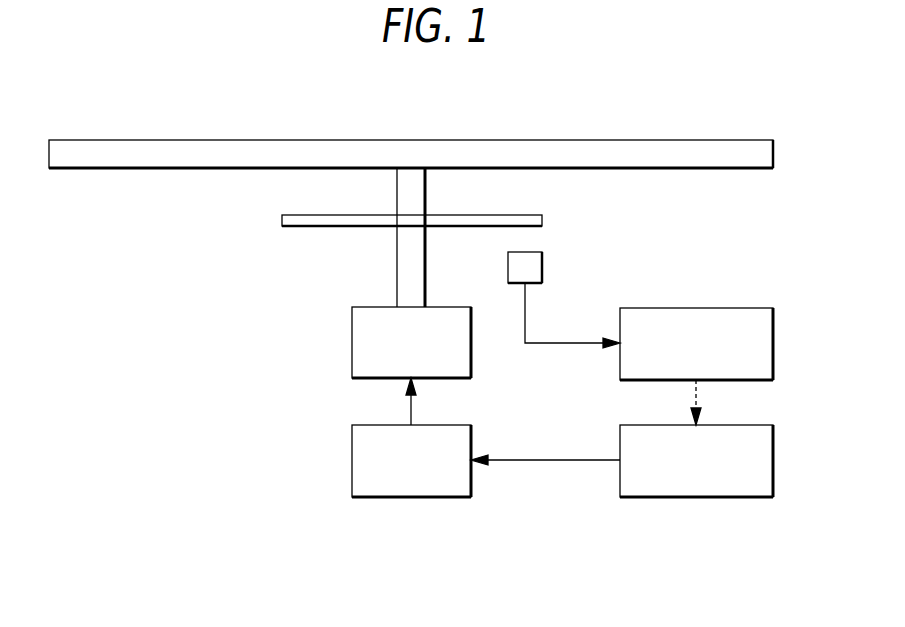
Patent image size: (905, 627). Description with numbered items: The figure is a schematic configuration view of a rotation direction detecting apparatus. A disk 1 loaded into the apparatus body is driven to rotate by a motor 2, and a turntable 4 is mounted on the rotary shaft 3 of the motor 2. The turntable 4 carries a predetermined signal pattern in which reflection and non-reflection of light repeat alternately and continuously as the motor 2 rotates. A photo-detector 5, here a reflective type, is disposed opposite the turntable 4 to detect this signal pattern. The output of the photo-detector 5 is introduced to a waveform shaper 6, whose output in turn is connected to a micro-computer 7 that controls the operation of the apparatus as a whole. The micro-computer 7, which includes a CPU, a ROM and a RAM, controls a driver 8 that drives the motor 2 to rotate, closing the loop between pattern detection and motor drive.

The disk 1 is at (592, 140).
The motor 2 is at (352, 343).
The rotary shaft 3 is at (397, 267).
The turntable 4 is at (282, 221).
The photo-detector 5 is at (545, 266).
The waveform shaper 6 is at (776, 342).
The micro-computer 7 is at (776, 460).
The driver 8 is at (352, 460).